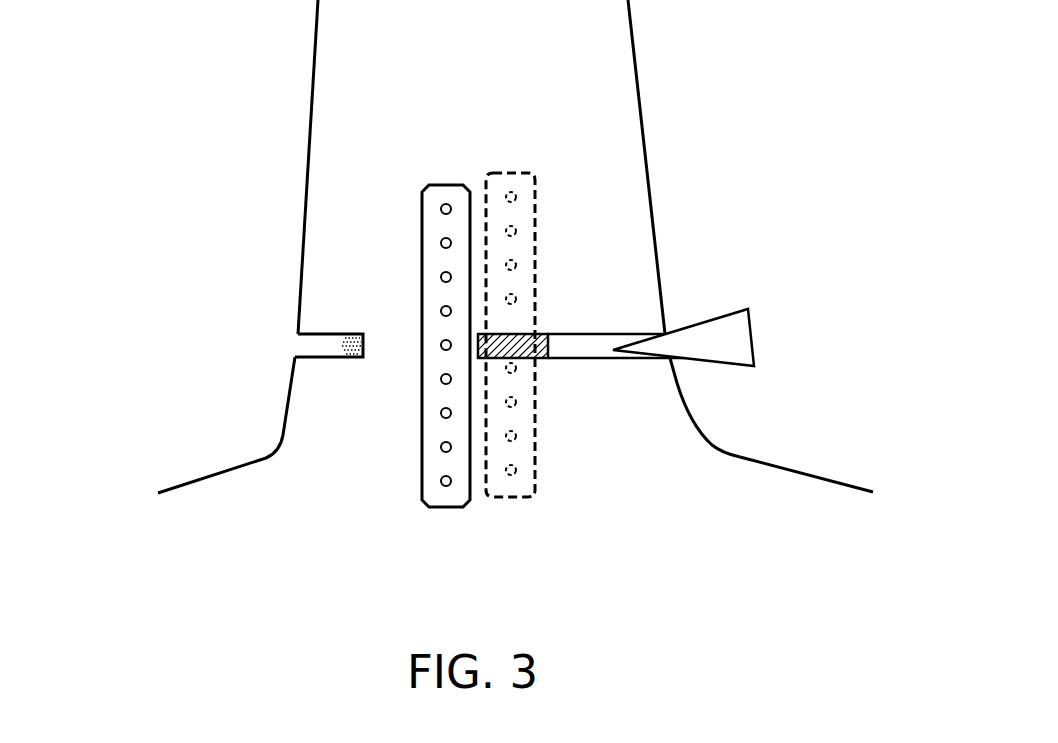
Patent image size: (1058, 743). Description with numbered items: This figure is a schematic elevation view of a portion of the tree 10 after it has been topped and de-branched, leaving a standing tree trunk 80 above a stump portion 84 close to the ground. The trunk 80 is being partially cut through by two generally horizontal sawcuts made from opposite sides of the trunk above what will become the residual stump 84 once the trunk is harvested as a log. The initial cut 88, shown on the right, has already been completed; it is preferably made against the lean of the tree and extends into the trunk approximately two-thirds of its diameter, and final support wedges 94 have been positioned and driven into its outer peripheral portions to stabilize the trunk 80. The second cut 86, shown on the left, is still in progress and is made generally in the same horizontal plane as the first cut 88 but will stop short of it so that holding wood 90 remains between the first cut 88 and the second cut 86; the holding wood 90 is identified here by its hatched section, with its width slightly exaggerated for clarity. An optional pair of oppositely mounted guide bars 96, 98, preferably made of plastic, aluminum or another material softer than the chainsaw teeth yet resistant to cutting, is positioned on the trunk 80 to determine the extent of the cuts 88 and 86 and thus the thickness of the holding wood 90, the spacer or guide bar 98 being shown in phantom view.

The tree 10 is at (657, 32).
The tree trunk 80 is at (310, 137).
The stump portion 84 is at (632, 467).
The second cut 86 is at (293, 344).
The initial cut 88 is at (587, 343).
The holding wood 90 is at (542, 333).
The final support wedges 94 is at (733, 325).
The guide bar 96 is at (420, 448).
The guide bar 98 is at (535, 465).